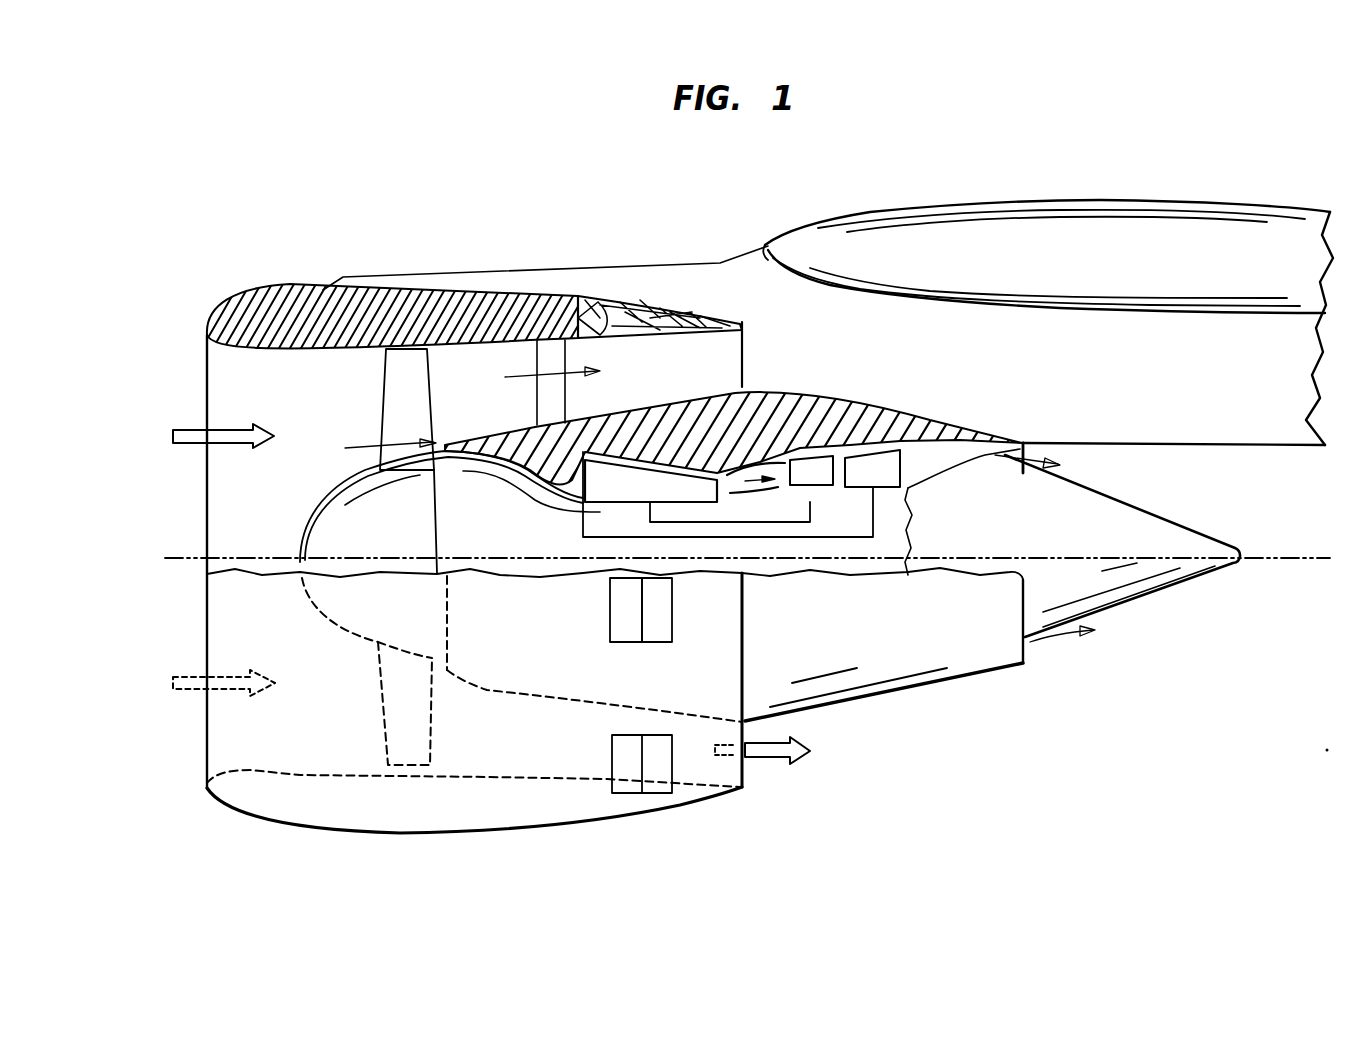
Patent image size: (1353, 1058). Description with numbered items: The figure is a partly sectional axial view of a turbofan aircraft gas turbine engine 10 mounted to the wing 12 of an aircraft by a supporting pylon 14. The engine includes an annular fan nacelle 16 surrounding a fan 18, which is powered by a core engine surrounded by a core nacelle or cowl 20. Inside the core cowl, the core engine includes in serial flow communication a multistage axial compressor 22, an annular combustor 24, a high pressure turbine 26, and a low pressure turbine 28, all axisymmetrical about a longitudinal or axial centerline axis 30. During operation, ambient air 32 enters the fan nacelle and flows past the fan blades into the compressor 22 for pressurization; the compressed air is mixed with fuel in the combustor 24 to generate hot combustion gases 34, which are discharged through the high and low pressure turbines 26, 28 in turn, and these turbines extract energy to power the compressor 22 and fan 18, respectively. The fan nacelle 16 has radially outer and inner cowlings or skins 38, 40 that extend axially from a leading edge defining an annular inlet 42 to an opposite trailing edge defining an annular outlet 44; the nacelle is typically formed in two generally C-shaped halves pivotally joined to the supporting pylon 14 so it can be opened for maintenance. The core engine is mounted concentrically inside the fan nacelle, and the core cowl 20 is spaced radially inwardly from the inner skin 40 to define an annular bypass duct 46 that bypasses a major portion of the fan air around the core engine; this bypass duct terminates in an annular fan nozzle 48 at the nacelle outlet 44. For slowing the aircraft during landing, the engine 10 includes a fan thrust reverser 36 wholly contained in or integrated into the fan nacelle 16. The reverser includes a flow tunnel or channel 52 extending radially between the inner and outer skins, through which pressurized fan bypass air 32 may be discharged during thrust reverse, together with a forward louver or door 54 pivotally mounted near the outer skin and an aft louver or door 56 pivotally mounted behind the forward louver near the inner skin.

The turbofan aircraft gas turbine engine 10 is at (300, 258).
The wing 12 is at (903, 207).
The supporting pylon 14 is at (1188, 392).
The fan nacelle 16 is at (256, 824).
The fan 18 is at (380, 412).
The core nacelle or cowl 20 is at (950, 412).
The multistage axial compressor 22 is at (607, 485).
The annular combustor 24 is at (762, 489).
The high pressure turbine 26 is at (820, 488).
The low pressure turbine 28 is at (880, 488).
The longitudinal or axial centerline axis 30 is at (1281, 558).
The ambient air 32 is at (188, 447).
The hot combustion gases 34 is at (1047, 648).
The fan thrust reverser 36 is at (647, 285).
The outer skin 38 is at (403, 289).
The inner skin 40 is at (497, 350).
The annular inlet 42 is at (207, 385).
The annular outlet 44 is at (745, 352).
The annular bypass duct 46 is at (520, 409).
The annular fan nozzle 48 is at (728, 365).
The flow tunnel or channel 52 is at (623, 643).
The forward louver or door 54 is at (607, 621).
The aft louver or door 56 is at (655, 622).